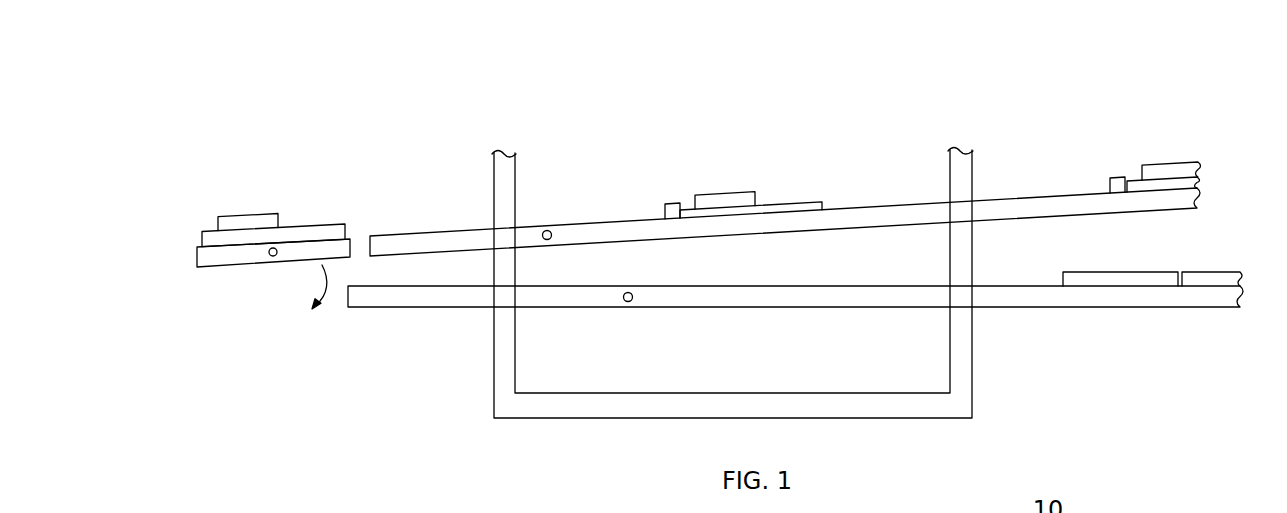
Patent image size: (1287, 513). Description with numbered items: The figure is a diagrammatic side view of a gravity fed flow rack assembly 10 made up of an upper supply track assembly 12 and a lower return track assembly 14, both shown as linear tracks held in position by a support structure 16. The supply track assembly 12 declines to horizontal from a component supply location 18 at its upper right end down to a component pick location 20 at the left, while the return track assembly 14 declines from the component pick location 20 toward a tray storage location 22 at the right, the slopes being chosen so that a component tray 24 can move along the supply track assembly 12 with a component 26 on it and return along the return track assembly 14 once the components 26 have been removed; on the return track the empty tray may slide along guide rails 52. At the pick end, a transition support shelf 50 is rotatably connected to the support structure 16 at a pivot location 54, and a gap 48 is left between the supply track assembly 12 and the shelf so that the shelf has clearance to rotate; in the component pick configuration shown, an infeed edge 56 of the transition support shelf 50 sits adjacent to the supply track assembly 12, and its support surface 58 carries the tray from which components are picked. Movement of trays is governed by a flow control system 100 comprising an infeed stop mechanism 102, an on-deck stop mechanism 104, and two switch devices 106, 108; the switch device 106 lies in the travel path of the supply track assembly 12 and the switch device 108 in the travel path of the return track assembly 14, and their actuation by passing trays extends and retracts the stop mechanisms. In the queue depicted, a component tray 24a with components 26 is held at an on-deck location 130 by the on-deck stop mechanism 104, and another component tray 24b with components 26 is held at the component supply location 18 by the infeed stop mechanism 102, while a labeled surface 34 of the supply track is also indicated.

The flow rack assembly 10 is at (1047, 130).
The upper supply track assembly 12 is at (782, 172).
The lower return track assembly 14 is at (795, 333).
The support structure 16 is at (987, 372).
The component supply location 18 is at (1175, 123).
The component pick location 20 is at (683, 166).
The tray storage location 22 is at (1165, 338).
The component tray 24 is at (295, 224).
The component tray 24a is at (813, 200).
The component tray 24b is at (1194, 182).
The component 26 is at (248, 215).
The surface 34 is at (1012, 210).
The gap 48 is at (365, 225).
The transition support shelf 50 is at (299, 308).
The guide rails 52 is at (722, 306).
The pivot location 54 is at (273, 257).
The infeed edge 56 is at (350, 255).
The support surface 58 is at (203, 248).
The flow control system 100 is at (625, 193).
The infeed stop mechanism 102 is at (1117, 176).
The on-deck stop mechanism 104 is at (668, 202).
The switch device 106 is at (547, 230).
The switch device 108 is at (627, 302).
The on-deck location 130 is at (740, 137).